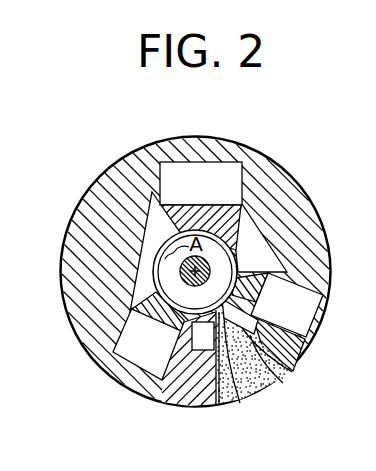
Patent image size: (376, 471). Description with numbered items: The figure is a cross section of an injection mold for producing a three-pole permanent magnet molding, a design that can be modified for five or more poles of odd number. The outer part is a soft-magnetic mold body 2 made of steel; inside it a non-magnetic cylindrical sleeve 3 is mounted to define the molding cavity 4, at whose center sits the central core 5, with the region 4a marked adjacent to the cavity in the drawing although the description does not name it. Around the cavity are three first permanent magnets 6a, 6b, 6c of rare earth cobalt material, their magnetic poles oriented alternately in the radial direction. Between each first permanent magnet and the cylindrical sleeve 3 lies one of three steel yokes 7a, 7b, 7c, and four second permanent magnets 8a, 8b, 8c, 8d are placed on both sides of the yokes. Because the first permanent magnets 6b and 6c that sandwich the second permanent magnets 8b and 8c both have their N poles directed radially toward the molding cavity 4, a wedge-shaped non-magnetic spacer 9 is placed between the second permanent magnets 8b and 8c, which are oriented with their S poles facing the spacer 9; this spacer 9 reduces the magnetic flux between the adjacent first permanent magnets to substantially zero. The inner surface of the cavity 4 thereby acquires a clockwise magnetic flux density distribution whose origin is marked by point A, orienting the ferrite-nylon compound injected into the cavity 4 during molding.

The mold body 2 is at (61, 277).
The cylindrical sleeve 3 is at (137, 250).
The cavity 4 is at (230, 407).
The rotor hub 4a is at (210, 262).
The central core 5 is at (180, 275).
The first permanent magnet 6a is at (228, 178).
The first permanent magnet 6b is at (297, 288).
The first permanent magnet 6c is at (127, 326).
The yoke 7a is at (221, 208).
The yoke 7b is at (301, 337).
The yoke 7c is at (178, 345).
The second permanent magnet 8a is at (248, 234).
The second permanent magnet 8b is at (265, 385).
The second permanent magnet 8c is at (203, 352).
The second permanent magnet 8d is at (140, 262).
The non-magnetic spacer 9 is at (281, 387).